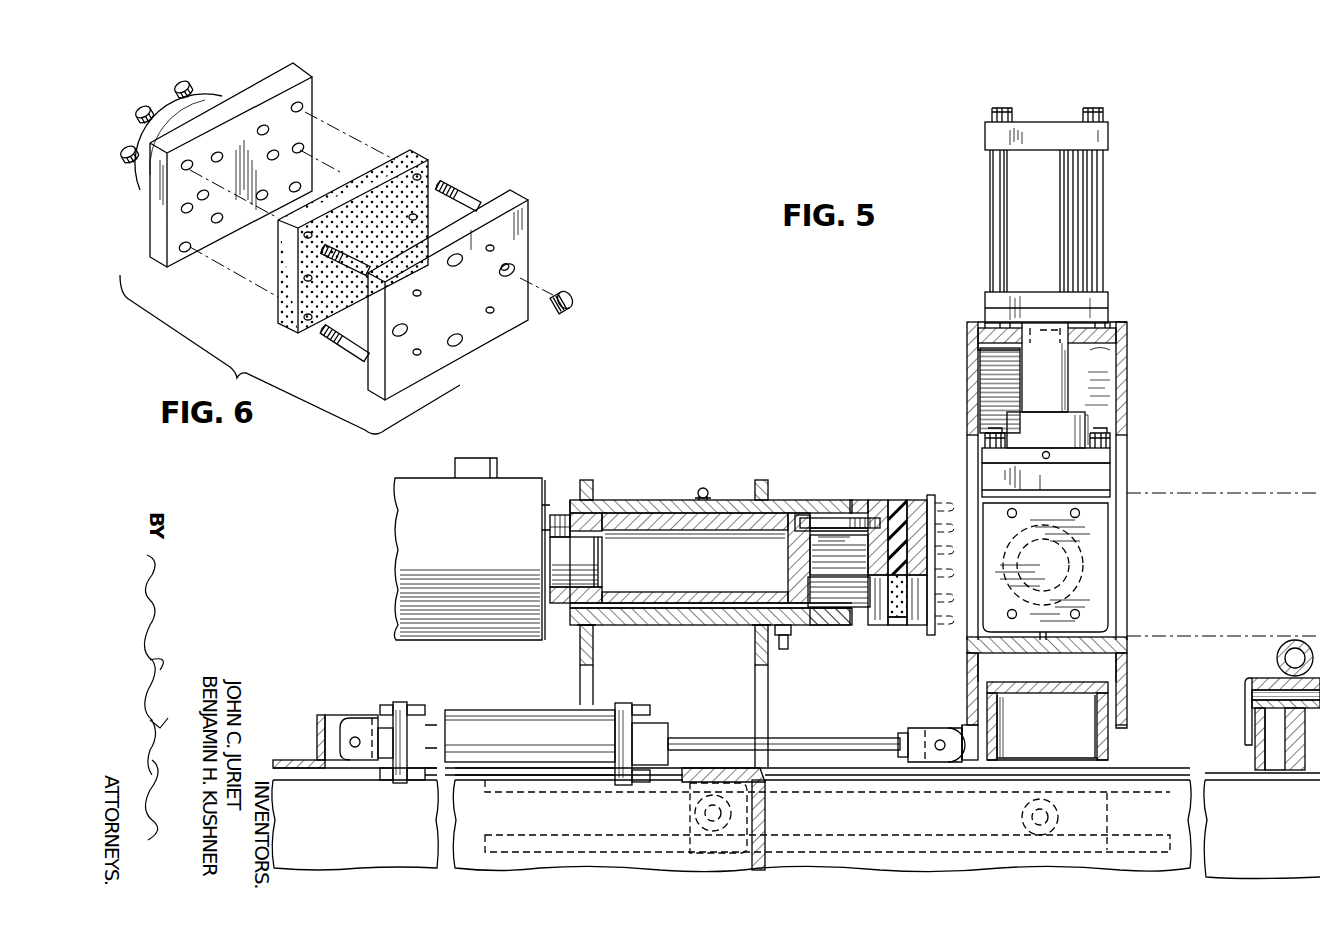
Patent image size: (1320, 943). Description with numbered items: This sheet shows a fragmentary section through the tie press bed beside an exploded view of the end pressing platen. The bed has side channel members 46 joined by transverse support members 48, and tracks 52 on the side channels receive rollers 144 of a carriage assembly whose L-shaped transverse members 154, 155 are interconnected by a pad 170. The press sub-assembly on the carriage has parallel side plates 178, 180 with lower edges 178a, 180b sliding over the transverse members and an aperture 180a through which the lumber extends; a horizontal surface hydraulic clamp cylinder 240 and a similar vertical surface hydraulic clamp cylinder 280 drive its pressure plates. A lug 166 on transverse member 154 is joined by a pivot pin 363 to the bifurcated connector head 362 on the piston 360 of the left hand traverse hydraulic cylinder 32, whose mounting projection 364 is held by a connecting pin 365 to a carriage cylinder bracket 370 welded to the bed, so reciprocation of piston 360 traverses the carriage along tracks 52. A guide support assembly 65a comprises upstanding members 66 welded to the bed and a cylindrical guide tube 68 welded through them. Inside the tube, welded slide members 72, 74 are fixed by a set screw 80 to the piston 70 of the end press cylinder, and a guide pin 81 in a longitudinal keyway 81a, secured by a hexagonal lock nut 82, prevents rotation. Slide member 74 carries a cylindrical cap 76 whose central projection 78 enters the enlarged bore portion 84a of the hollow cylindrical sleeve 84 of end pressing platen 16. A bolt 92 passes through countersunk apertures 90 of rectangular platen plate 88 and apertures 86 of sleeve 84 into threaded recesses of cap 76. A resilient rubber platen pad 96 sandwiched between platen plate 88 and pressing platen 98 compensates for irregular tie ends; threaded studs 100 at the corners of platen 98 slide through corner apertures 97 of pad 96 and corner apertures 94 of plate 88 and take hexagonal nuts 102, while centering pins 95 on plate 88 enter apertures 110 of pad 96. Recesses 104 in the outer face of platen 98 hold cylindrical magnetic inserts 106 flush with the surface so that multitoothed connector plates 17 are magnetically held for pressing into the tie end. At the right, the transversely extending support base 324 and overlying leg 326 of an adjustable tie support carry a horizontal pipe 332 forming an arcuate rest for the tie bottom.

In FIG. 5, the end pressing platen 16 is at (898, 627).
In FIG. 5, the multitoothed connector plates 17 is at (936, 500).
In FIG. 5, the left hand traverse hydraulic cylinder 32 is at (512, 692).
In FIG. 5, the side channel members 46 is at (1306, 825).
In FIG. 5, the transverse support members 48 is at (765, 803).
In FIG. 5, the rails 52 is at (595, 830).
In FIG. 5, the hydraulic cylinder guide support assembly 65a is at (656, 480).
In FIG. 5, the upstanding members 66 is at (590, 680).
In FIG. 5, the guide tube 68 is at (612, 500).
In FIG. 5, the piston 70 is at (582, 572).
In FIG. 5, the cylindrical slide member 72 is at (598, 540).
In FIG. 5, the elongated cylindrical slide member 74 is at (715, 530).
In FIG. 5, the cylindrical cap 76 is at (790, 570).
In FIG. 5, the central projection 78 is at (839, 571).
In FIG. 5, the set screw 80 is at (560, 500).
In FIG. 5, the guide pin 81 is at (783, 650).
In FIG. 5, the longitudinal keyway 81a is at (698, 618).
In FIG. 5, the hexagonal lock nut 82 is at (790, 632).
In FIG. 6, the hollow cylindrical sleeve 84 is at (187, 125).
In FIG. 5, the hollow cylindrical sleeve 84 is at (858, 506).
In FIG. 5, the increased diameter portion 84a is at (815, 538).
In FIG. 5, the apertures 86 is at (832, 518).
In FIG. 6, the platen plate 88 is at (308, 80).
In FIG. 5, the platen plate 88 is at (876, 505).
In FIG. 6, the countersunk apertures 90 is at (262, 128).
In FIG. 5, the countersunk apertures 90 is at (868, 541).
In FIG. 6, the bolt 92 is at (183, 82).
In FIG. 5, the bolt 92 is at (810, 520).
In FIG. 6, the corner apertures 94 is at (305, 104).
In FIG. 5, the corner apertures 94 is at (876, 628).
In FIG. 6, the centering pins 95 is at (305, 146).
In FIG. 6, the rubber platen pad 96 is at (418, 152).
In FIG. 5, the rubber platen pad 96 is at (898, 505).
In FIG. 6, the corner apertures 97 is at (415, 180).
In FIG. 6, the pressing platen 98 is at (520, 195).
In FIG. 5, the pressing platen 98 is at (920, 628).
In FIG. 6, the threaded studs 100 is at (462, 200).
In FIG. 5, the threaded studs 100 is at (897, 620).
In FIG. 5, the hexagonal nuts 102 is at (830, 622).
In FIG. 6, the recesses 104 is at (515, 262).
In FIG. 5, the recesses 104 is at (940, 541).
In FIG. 6, the magnetic inserts 106 is at (570, 290).
In FIG. 5, the magnetic inserts 106 is at (920, 505).
In FIG. 6, the apertures 110 is at (303, 279).
In FIG. 5, the rollers 144 is at (695, 808).
In FIG. 5, the transversely extending member 154 is at (998, 748).
In FIG. 5, the transversely extending member 155 is at (1108, 738).
In FIG. 5, the lug 166 is at (962, 725).
In FIG. 5, the pad 170 is at (1056, 676).
In FIG. 5, the side plate 178 is at (968, 368).
In FIG. 5, the lower edge 178a is at (998, 712).
In FIG. 5, the side plate 180 is at (1125, 372).
In FIG. 5, the rectangular aperture 180a is at (1117, 453).
In FIG. 5, the lower edge 180b is at (1122, 725).
In FIG. 5, the horizontal surface hydraulic clamp cylinder 240 is at (1114, 556).
In FIG. 5, the vertical surface hydraulic clamp cylinder 280 is at (1112, 207).
In FIG. 5, the support base 324 is at (1255, 720).
In FIG. 5, the channel shaped leg 326 is at (1244, 700).
In FIG. 5, the horizontally extending pipe 332 is at (1277, 657).
In FIG. 5, the piston 360 is at (725, 722).
In FIG. 5, the bifurcated connector 362 is at (925, 730).
In FIG. 5, the pivot pin 363 is at (940, 752).
In FIG. 5, the mounting projection 364 is at (355, 712).
In FIG. 5, the pin 365 is at (355, 748).
In FIG. 5, the carriage cylinder bracket 370 is at (285, 760).